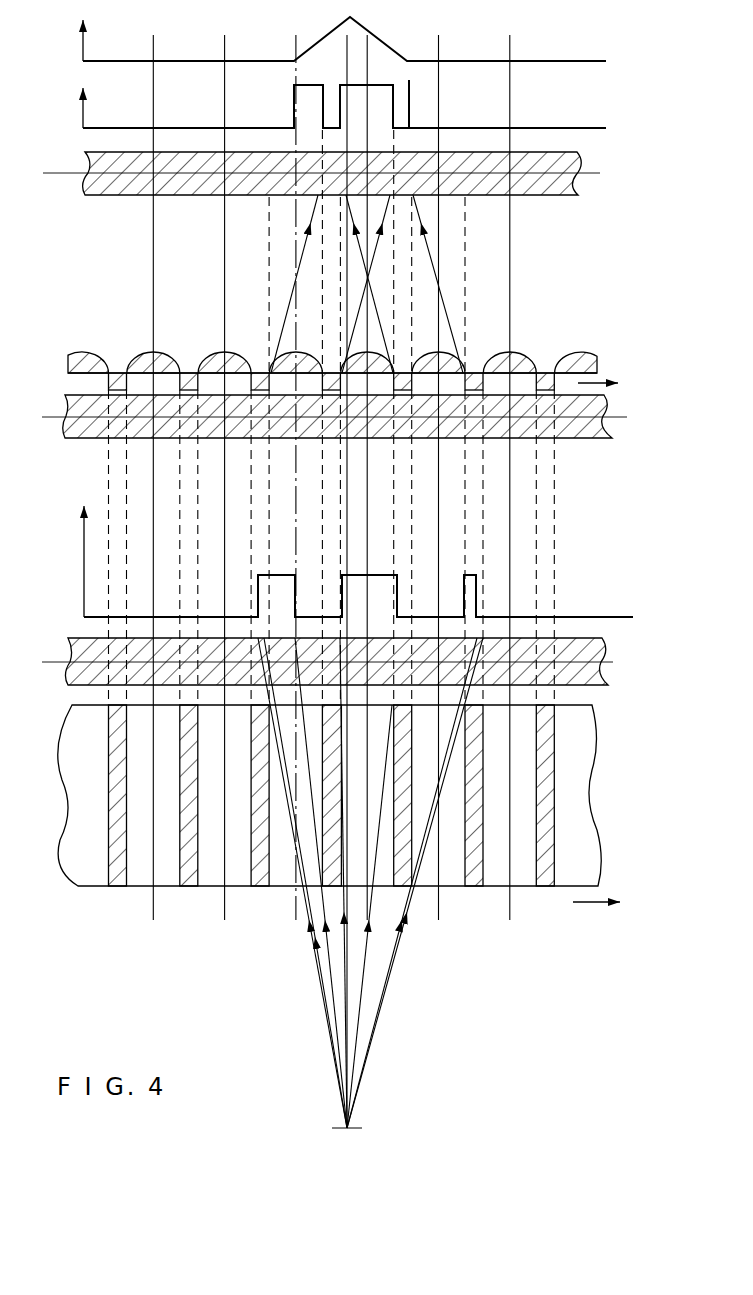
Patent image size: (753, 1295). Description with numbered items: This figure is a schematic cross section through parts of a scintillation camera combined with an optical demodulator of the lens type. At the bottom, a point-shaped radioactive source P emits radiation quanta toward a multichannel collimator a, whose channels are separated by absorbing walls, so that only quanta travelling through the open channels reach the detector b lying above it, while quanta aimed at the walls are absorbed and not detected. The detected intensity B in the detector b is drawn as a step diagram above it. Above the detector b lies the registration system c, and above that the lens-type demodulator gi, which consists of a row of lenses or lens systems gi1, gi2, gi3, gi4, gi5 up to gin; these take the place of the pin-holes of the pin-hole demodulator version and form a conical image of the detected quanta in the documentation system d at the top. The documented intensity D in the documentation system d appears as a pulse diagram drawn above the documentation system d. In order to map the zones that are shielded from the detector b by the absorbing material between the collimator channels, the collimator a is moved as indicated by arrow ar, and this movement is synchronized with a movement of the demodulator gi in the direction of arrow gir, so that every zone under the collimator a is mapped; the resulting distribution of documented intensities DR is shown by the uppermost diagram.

The documented intensities DR is at (328, 34).
The documented intensity D is at (328, 104).
The documentation system d is at (577, 157).
The lens-type demodulator gi is at (588, 357).
The lens system gi1 is at (162, 362).
The lens system gi2 is at (226, 361).
The lens system gi3 is at (303, 357).
The lens system gi4 is at (376, 355).
The lens system gi5 is at (447, 357).
The lens system gin is at (515, 357).
The lens array movement direction gir is at (616, 384).
The registration system c is at (606, 409).
The detected intensity B is at (341, 560).
The detector b is at (598, 650).
The multichannel collimator a is at (580, 798).
The arrow ar is at (596, 916).
The point-shaped radioactive source P is at (349, 1130).